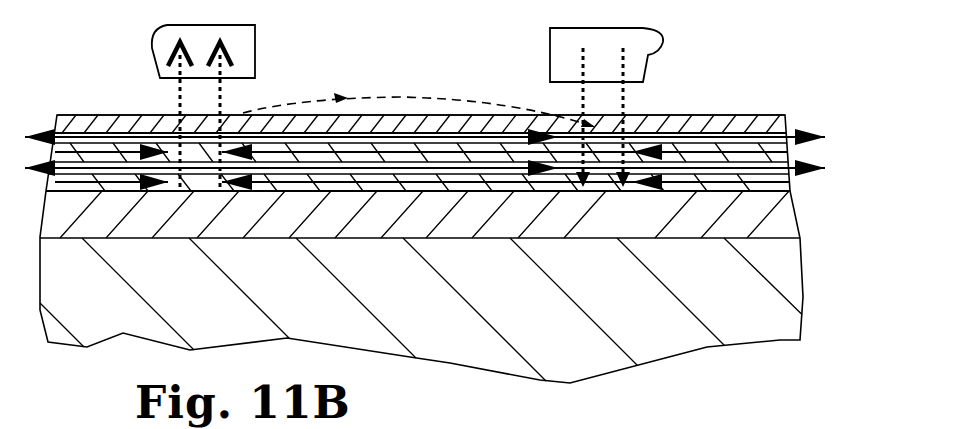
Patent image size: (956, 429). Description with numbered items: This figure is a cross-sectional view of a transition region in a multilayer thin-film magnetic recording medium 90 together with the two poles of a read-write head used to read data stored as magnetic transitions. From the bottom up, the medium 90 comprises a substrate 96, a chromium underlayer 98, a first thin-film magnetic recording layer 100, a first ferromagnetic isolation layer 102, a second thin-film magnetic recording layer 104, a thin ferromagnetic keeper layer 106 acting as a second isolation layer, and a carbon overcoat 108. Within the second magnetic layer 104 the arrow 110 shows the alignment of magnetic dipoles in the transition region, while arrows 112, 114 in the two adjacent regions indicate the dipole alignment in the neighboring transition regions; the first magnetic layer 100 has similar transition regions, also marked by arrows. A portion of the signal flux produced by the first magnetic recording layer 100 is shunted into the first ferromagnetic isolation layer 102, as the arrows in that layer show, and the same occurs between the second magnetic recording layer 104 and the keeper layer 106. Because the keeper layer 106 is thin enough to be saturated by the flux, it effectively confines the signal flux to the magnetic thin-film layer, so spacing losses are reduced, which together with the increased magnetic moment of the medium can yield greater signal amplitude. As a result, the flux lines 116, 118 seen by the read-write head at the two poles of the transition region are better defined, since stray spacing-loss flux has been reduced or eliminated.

The magneto-optical recording medium 90 is at (817, 258).
The substrate 96 is at (600, 309).
The chromium underlayer 98 is at (608, 226).
The first thin-film magnetic recording layer 100 is at (779, 184).
The first ferromagnetic isolation layer 102 is at (778, 169).
The second thin-film magnetic recording layer 104 is at (777, 144).
The ferromagnetic keeper layer 106 is at (773, 134).
The carbon overcoat 108 is at (770, 117).
The arrow 110 is at (298, 150).
The arrow 112 is at (80, 150).
The arrow 114 is at (693, 152).
The flux lines 116 is at (177, 97).
The flux lines 118 is at (580, 112).